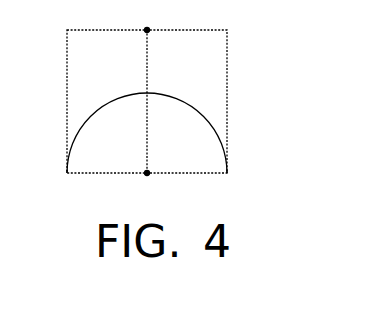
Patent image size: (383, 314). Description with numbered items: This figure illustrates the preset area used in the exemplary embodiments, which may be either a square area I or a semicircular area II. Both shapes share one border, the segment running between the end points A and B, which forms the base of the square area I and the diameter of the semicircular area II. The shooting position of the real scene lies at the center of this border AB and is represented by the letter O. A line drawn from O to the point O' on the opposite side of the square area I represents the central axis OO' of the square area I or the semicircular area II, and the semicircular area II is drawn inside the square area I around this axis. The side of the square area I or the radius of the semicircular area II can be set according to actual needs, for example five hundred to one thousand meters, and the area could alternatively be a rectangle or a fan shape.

The square area I is at (217, 60).
The semicircular area II is at (222, 152).
The end point of central axis O' is at (148, 20).
The shooting position O is at (155, 164).
The end point of border AB A is at (58, 175).
The end point of border AB B is at (234, 175).